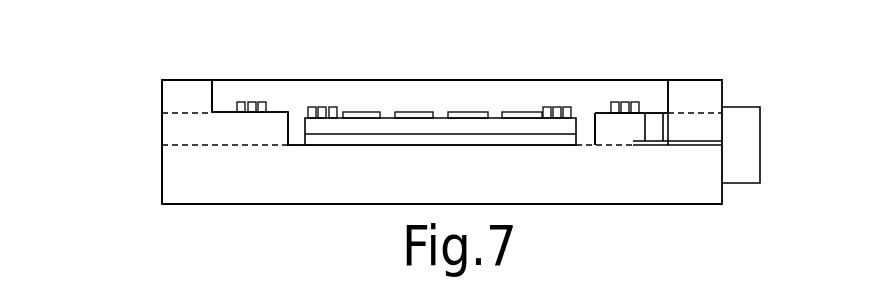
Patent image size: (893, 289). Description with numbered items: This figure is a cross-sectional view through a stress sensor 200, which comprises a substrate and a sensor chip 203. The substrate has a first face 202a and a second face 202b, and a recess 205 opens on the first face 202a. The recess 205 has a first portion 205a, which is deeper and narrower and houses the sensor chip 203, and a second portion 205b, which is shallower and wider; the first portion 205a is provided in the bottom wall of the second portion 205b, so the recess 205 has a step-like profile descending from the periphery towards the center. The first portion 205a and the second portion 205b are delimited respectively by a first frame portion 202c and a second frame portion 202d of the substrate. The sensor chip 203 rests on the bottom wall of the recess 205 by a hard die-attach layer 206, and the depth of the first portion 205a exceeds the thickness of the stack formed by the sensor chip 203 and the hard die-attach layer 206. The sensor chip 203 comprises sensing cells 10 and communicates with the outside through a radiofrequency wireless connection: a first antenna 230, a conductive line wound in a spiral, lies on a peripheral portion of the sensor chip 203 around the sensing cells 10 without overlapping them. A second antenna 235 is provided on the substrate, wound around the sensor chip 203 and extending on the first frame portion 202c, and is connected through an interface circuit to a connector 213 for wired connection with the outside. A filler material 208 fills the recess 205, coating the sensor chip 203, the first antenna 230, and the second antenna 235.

The stress sensor 200 is at (95, 98).
The first face 202a is at (195, 79).
The second face 202b is at (204, 207).
The first frame portion 202c is at (163, 132).
The second frame portion 202d is at (163, 99).
The sensor chip 203 is at (343, 130).
The recess 205 is at (446, 97).
The first portion 205a is at (591, 127).
The second portion 205b is at (218, 99).
The hard die-attach layer 206 is at (513, 142).
The filler material 208 is at (430, 88).
The sensing cells 10 is at (407, 112).
The connector 213 is at (742, 115).
The first antenna 230 is at (333, 107).
The second antenna 235 is at (262, 102).